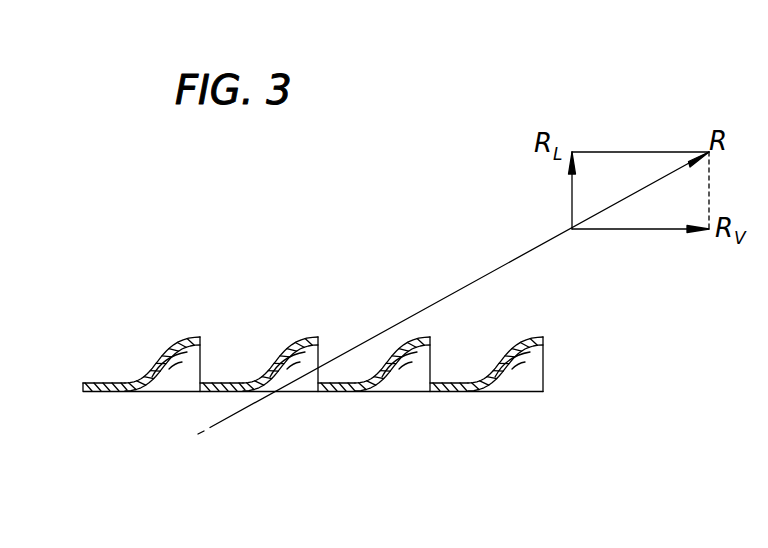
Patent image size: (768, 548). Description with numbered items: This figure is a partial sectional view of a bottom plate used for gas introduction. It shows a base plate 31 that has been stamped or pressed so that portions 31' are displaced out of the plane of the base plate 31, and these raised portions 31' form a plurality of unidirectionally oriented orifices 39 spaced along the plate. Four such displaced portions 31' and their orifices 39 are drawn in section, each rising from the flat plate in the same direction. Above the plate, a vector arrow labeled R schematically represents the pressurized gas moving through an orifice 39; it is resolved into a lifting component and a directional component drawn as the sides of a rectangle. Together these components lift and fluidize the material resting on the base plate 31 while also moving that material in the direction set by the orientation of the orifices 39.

The base plate 31 is at (296, 410).
The displaced portions 31' is at (132, 352).
The orifices 39 is at (203, 362).